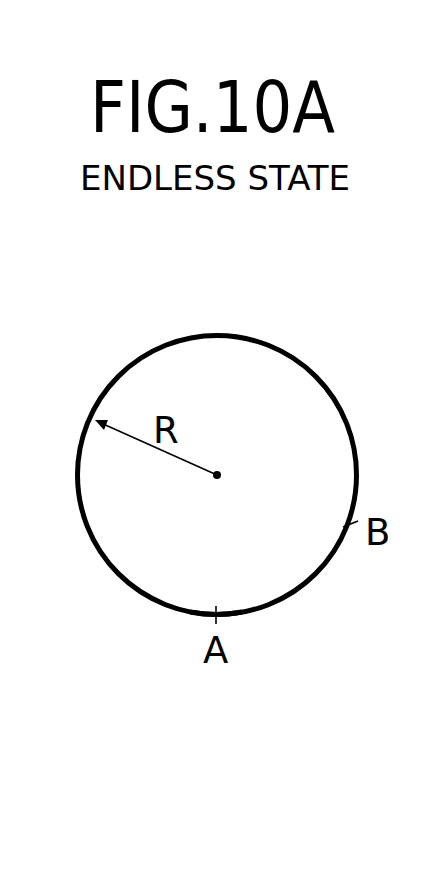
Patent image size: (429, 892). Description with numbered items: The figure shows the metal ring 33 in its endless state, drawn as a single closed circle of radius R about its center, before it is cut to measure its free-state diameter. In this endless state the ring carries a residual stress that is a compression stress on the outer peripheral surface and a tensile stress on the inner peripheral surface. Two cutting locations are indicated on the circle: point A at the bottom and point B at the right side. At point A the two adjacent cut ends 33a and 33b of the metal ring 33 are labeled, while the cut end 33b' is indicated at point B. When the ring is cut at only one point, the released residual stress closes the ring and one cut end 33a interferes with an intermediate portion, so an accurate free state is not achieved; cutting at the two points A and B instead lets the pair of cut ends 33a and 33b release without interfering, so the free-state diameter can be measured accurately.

The metal ring 33 is at (287, 333).
The cut end 33a is at (215, 615).
The cut end 33b is at (254, 573).
The cut end 33b' is at (285, 468).